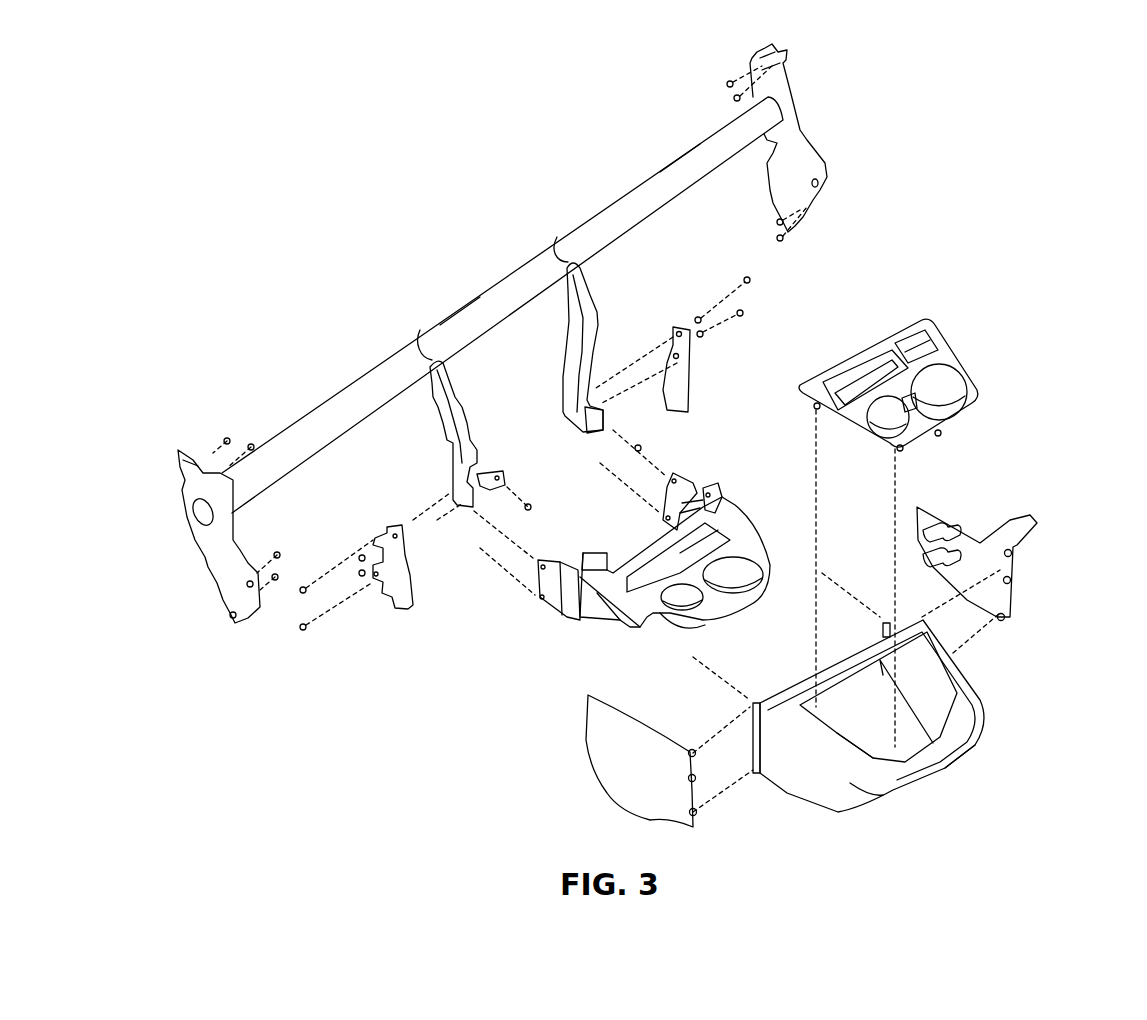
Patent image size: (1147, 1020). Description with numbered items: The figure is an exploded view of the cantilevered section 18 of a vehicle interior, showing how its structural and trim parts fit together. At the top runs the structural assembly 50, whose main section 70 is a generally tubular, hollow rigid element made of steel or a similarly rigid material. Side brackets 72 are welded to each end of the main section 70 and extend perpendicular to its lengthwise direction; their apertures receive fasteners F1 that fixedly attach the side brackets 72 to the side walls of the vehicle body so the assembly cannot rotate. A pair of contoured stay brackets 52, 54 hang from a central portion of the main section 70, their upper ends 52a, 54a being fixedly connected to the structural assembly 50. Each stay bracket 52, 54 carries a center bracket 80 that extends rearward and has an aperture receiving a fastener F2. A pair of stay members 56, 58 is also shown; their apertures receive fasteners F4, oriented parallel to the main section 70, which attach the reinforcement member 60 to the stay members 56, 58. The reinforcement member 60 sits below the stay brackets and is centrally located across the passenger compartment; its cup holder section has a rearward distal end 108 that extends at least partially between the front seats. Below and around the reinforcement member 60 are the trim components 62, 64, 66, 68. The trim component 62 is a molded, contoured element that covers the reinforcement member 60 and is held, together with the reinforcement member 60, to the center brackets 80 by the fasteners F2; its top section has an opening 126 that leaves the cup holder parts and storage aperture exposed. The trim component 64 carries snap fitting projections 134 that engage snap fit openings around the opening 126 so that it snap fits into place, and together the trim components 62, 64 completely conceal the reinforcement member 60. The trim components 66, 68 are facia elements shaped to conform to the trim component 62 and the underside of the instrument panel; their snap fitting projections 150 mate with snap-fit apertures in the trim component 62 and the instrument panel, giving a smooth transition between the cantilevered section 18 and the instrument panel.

The cantilevered section 18 is at (431, 252).
The structural assembly 50 is at (617, 203).
The stay bracket 52 is at (467, 410).
The upper end of stay bracket 52a is at (420, 340).
The stay bracket 54 is at (590, 276).
The upper end of stay bracket 54a is at (560, 250).
The stay member 56 is at (413, 575).
The stay member 58 is at (695, 360).
The reinforcement member 60 is at (735, 505).
The trim component 62 is at (800, 680).
The trim component 64 is at (943, 332).
The trim component 66 is at (622, 713).
The trim component 68 is at (957, 525).
The main section 70 is at (676, 147).
The side bracket 72 is at (800, 132).
The center bracket 80 is at (604, 412).
The distal end 108 is at (968, 775).
The opening 126 is at (860, 720).
The snap fitting projections 134 is at (814, 406).
The snap fitting projections 150 is at (1026, 617).
The fasteners F1 is at (728, 85).
The fasteners F2 is at (636, 449).
The fasteners F4 is at (303, 628).